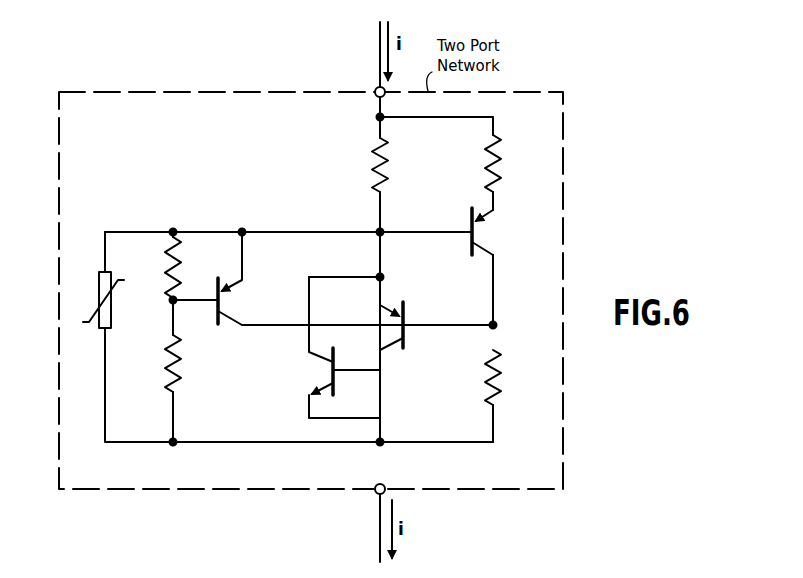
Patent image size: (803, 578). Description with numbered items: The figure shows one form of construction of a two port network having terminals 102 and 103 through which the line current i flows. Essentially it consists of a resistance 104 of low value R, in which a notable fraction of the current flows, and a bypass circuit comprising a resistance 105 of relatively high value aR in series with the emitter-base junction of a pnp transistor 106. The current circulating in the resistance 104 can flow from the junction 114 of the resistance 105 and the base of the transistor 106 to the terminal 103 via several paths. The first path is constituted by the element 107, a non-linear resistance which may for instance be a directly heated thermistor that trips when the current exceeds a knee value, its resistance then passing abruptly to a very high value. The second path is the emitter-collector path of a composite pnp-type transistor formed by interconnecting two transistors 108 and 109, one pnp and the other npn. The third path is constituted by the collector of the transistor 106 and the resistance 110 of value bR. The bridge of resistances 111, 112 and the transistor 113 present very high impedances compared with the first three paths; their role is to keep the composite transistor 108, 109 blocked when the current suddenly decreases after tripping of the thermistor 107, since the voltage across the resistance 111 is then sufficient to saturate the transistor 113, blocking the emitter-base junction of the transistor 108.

The terminal 102 is at (375, 89).
The terminal 103 is at (374, 494).
The resistance 104 is at (372, 167).
The resistance 105 is at (487, 167).
The pnp transistor 106 is at (480, 230).
The non-linear resistance 107 is at (111, 314).
The transistor 108 is at (408, 318).
The transistor 109 is at (328, 374).
The resistance 110 is at (484, 377).
The resistance 111 is at (181, 268).
The resistance 112 is at (199, 346).
The transistor 113 is at (222, 300).
The junction 114 is at (376, 231).